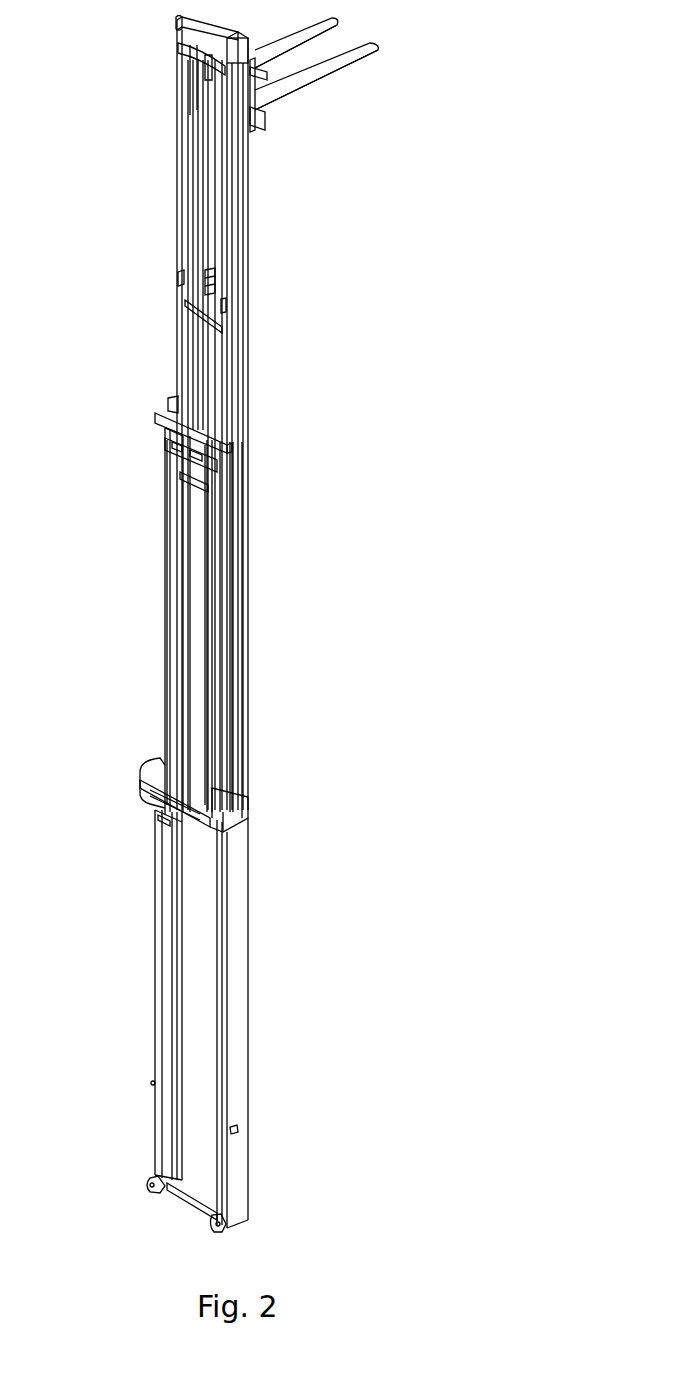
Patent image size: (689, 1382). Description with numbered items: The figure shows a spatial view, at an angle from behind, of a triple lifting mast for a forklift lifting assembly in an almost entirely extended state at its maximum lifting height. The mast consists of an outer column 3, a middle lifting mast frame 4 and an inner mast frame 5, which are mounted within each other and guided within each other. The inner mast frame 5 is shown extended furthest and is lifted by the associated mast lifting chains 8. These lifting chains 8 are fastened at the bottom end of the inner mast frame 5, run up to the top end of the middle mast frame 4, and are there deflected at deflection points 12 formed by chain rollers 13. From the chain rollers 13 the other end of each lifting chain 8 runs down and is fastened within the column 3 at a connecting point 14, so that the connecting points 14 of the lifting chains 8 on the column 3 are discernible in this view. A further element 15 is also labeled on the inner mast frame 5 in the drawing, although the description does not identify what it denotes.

The outer column 3 is at (237, 990).
The lifting mast frame 4 is at (237, 668).
The inner mast frame 5 is at (238, 388).
The mast lifting chains 8 is at (208, 590).
The deflection points 12 is at (177, 438).
The chain rollers 13 is at (200, 463).
The connecting point 14 is at (188, 843).
The fastening fixture 15 is at (200, 308).